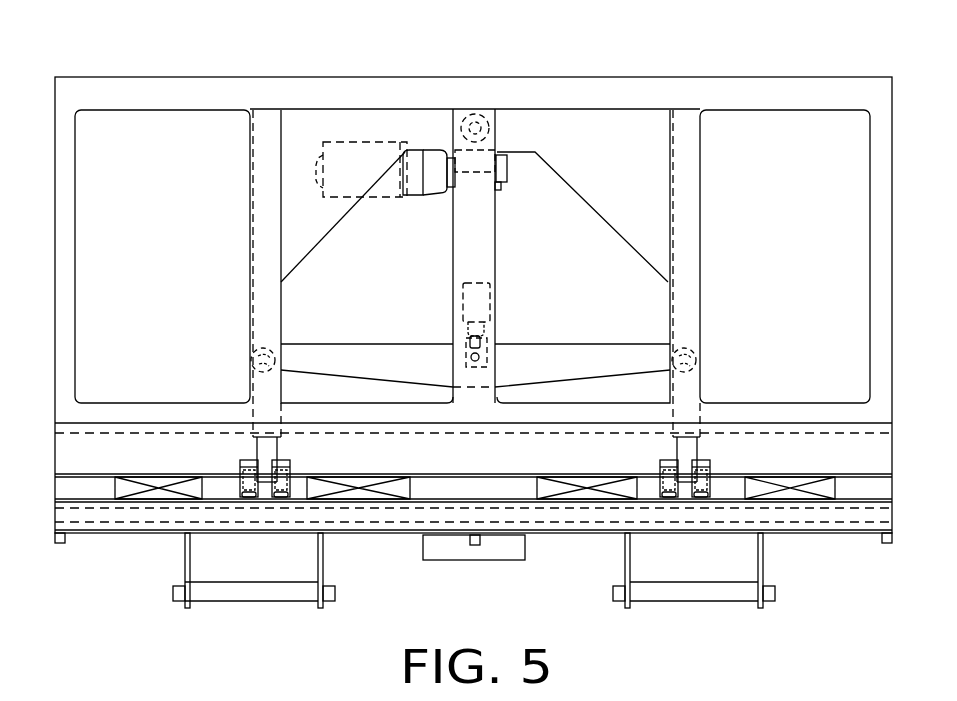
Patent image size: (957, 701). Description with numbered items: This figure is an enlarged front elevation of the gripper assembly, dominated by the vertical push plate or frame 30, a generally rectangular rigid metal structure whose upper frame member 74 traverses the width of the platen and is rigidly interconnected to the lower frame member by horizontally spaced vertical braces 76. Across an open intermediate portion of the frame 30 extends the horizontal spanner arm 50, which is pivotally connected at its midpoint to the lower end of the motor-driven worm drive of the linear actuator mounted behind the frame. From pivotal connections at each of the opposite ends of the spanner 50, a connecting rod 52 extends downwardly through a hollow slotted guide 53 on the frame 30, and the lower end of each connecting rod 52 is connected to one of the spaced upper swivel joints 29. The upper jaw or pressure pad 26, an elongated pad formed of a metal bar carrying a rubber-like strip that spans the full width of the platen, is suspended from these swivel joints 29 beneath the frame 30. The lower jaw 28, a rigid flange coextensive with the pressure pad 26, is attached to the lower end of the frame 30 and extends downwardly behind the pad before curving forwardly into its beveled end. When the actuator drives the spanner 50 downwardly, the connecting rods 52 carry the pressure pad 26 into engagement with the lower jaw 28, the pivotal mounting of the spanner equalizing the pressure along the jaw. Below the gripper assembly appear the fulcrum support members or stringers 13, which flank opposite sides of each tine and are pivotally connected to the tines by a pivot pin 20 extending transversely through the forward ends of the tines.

The vertical push plate or frame 30 is at (180, 70).
The upper frame member 74 is at (460, 88).
The vertical braces 76 is at (258, 256).
The spanner arm 50 is at (320, 350).
The connecting rod 52 is at (258, 394).
The hollow slotted guide 53 is at (240, 414).
The upper swivel joints 29 is at (240, 466).
The upper jaw or pressure pad 26 is at (55, 507).
The lower jaw 28 is at (57, 537).
The fulcrum support members or stringers 13 is at (185, 561).
The pivot pin 20 is at (173, 594).